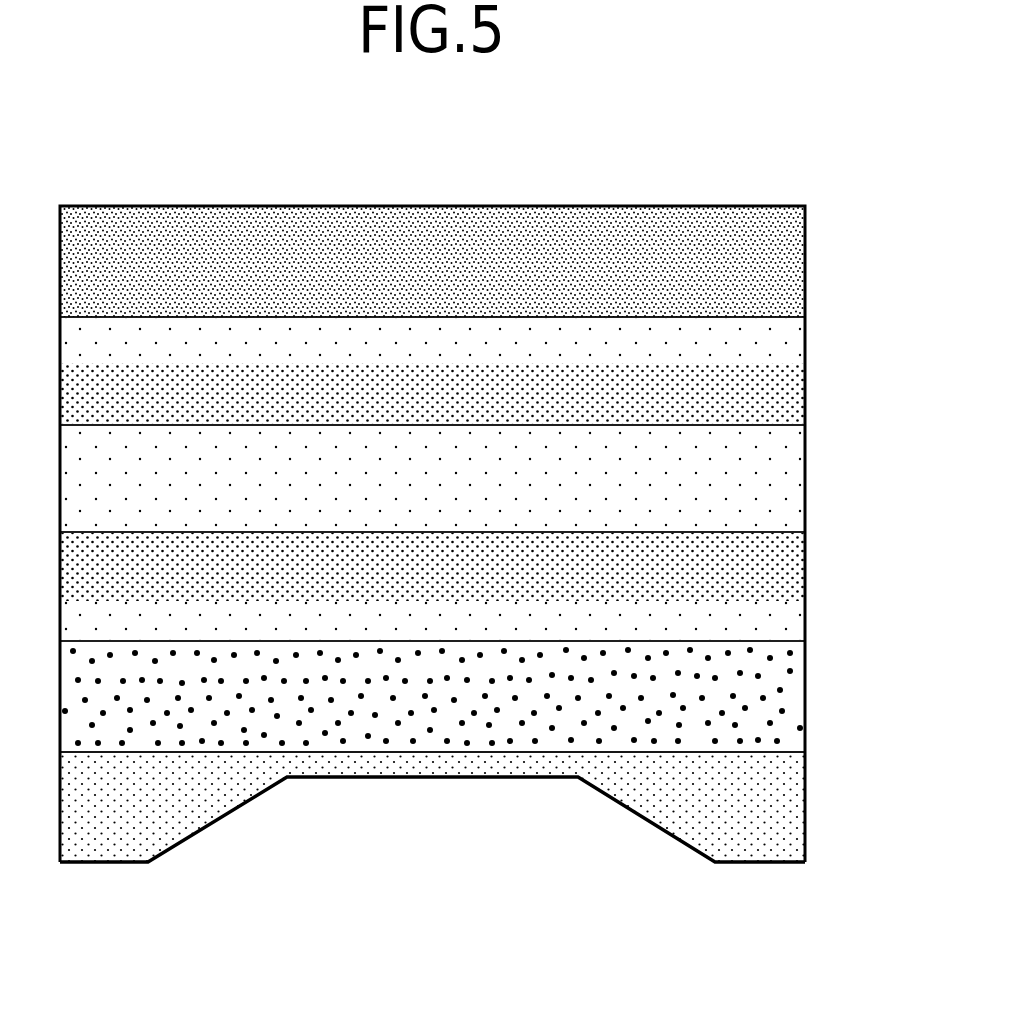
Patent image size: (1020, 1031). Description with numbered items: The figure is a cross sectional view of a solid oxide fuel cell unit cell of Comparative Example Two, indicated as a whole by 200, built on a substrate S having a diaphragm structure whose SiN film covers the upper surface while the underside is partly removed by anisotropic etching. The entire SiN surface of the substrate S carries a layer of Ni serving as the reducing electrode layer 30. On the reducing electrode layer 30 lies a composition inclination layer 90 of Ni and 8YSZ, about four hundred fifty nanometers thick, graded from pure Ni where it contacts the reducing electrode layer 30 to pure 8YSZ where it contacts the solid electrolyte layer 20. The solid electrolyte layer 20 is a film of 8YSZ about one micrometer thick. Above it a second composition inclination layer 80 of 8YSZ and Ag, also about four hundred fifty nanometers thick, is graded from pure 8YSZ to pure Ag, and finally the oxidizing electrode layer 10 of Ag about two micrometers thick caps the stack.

The organic light emitting device 200 is at (656, 180).
The oxidizing electrode layer 10 is at (787, 262).
The composition inclination layer 80 is at (787, 368).
The solid electrolyte layer 20 is at (787, 473).
The composition inclination layer 90 is at (787, 587).
The reducing electrode layer 30 is at (787, 700).
The substrate S is at (787, 802).